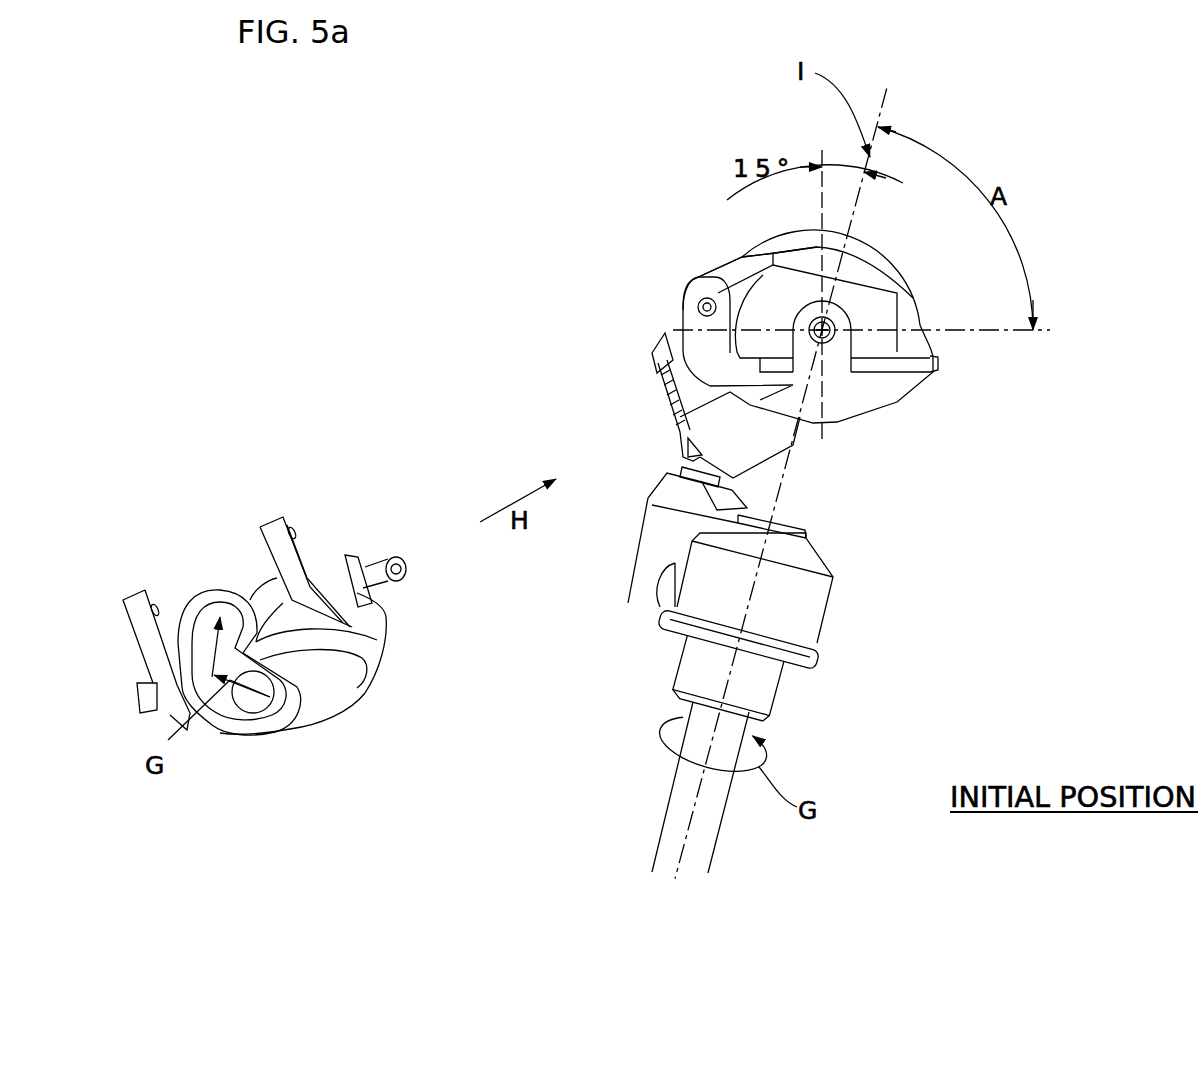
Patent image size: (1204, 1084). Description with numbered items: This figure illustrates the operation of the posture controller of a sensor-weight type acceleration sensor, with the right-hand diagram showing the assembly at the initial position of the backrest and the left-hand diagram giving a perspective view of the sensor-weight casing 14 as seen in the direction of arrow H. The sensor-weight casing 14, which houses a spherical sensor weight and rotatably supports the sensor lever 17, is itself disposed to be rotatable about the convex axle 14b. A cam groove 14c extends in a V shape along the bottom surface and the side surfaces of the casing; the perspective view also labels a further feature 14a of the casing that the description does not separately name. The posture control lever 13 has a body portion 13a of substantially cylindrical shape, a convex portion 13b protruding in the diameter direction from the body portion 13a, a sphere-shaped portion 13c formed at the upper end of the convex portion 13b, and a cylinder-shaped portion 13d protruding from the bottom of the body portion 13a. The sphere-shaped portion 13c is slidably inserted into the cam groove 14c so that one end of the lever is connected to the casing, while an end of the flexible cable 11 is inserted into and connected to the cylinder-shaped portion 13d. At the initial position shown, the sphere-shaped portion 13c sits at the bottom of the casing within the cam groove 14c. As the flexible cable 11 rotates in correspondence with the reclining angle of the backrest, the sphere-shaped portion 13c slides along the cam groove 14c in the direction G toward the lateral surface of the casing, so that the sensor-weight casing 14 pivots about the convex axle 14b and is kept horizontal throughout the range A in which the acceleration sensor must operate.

The flexible cable 11 is at (667, 818).
The posture control lever 13 is at (829, 621).
The body portion 13a is at (817, 598).
The convex portion 13b is at (650, 553).
The sphere-shaped portion 13c is at (682, 445).
The cylinder-shaped portion 13d is at (768, 683).
The sensor-weight casing 14 is at (663, 333).
The mounting bracket hole 14a is at (698, 307).
The convex axle 14b is at (830, 338).
The cam groove 14c is at (657, 377).
The sensor lever 17 is at (718, 272).